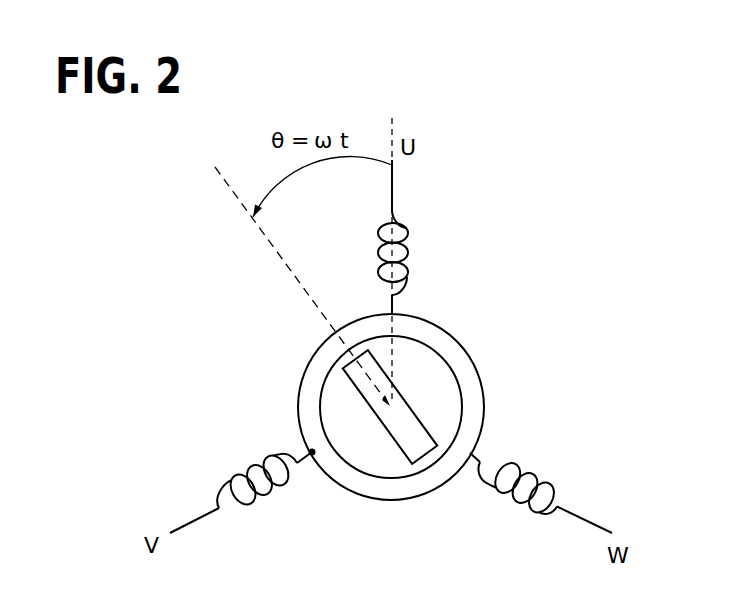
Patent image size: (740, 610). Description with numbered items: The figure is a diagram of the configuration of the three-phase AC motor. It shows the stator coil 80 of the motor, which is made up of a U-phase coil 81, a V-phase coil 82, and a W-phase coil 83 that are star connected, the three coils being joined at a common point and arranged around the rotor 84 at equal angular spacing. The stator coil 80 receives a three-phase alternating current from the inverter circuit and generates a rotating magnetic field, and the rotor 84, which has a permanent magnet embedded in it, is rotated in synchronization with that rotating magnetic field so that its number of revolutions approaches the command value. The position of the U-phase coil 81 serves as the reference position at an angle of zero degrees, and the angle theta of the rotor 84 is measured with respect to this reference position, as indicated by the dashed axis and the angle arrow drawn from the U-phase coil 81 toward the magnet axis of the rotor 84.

The stator coil 80 is at (572, 218).
The U-phase coil 81 is at (408, 244).
The V-phase coil 82 is at (240, 473).
The W-phase coil 83 is at (507, 462).
The rotor 84 is at (362, 477).